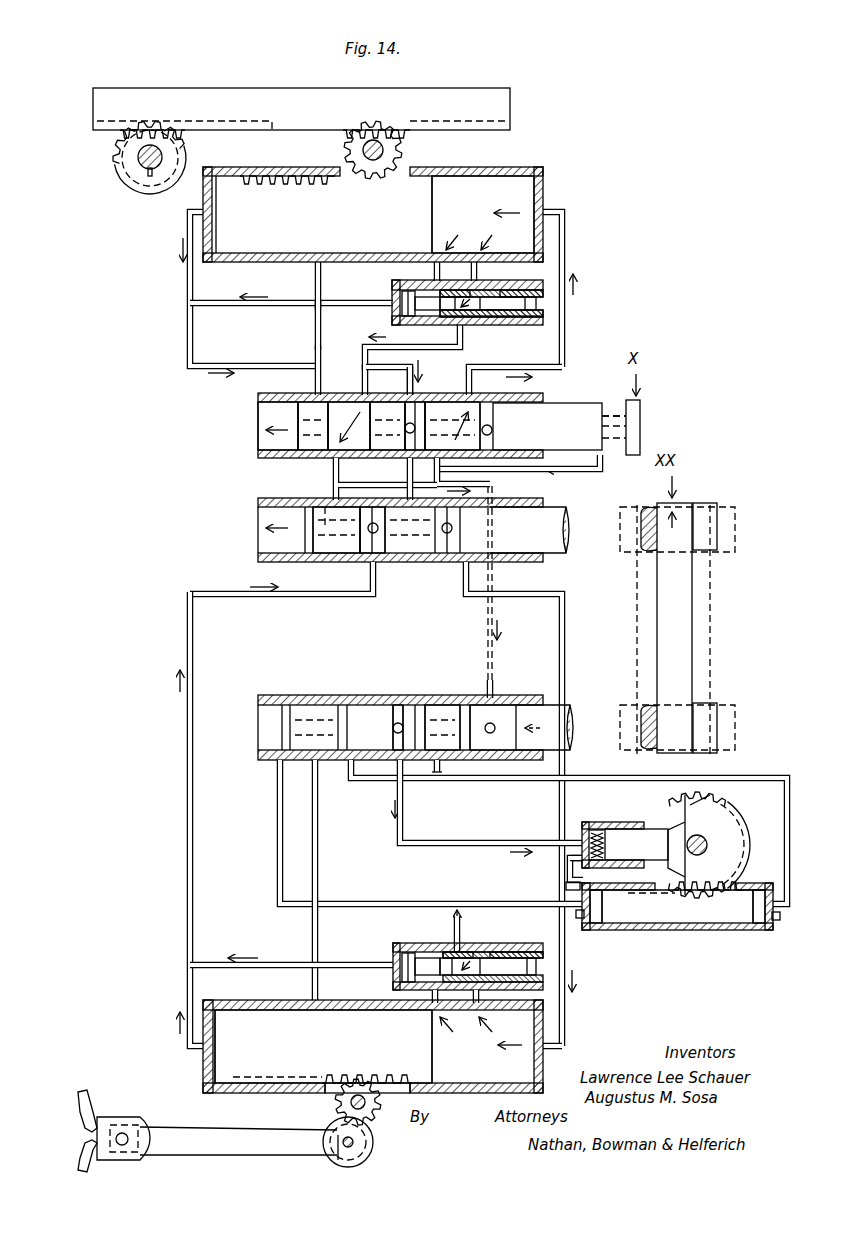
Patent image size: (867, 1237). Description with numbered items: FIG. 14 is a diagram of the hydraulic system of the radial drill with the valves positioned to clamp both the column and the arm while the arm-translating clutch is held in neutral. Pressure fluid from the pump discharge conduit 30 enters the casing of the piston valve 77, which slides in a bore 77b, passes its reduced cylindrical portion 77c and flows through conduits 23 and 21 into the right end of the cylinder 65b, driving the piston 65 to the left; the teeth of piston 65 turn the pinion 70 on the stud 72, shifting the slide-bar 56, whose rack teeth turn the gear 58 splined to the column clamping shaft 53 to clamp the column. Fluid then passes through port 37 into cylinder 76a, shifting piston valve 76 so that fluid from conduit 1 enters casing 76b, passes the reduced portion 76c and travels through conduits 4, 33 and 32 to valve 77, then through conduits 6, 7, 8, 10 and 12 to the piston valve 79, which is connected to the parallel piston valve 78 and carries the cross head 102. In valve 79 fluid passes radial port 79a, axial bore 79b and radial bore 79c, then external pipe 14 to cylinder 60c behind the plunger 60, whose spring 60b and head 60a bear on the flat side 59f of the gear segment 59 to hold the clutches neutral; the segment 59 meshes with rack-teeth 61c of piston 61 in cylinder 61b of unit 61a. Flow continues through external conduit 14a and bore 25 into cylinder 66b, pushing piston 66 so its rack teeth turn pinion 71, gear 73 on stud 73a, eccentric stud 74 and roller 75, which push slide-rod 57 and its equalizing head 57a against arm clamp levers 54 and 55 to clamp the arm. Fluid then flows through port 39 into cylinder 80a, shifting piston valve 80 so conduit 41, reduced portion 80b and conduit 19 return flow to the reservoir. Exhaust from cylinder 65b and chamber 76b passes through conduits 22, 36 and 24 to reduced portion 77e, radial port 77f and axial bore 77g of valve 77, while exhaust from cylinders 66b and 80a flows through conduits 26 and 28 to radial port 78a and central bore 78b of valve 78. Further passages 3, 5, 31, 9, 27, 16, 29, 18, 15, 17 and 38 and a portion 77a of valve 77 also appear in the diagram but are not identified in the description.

The slide-bar 56 is at (301, 113).
The gear 58 is at (113, 153).
The column clamping shaft 53 is at (140, 162).
The stud 72 is at (362, 150).
The pinion 70 is at (400, 150).
The piston 65 is at (373, 214).
The cylinder 65b is at (470, 178).
The conduit 22 is at (198, 210).
The conduit 21 is at (546, 212).
The conduit 3 is at (314, 270).
The conduit 5 is at (314, 334).
The conduit 31 is at (321, 352).
The conduit 36 is at (388, 306).
The port 37 is at (433, 274).
The conduit 1 is at (478, 274).
The piston valve 76 is at (467, 302).
The cylinder 76a is at (447, 289).
The casing 76b is at (514, 285).
The reduced portion 76c is at (478, 326).
The conduit 33 is at (430, 346).
The conduit 4 is at (462, 333).
The conduit 32 is at (406, 376).
The conduit 24 is at (414, 372).
The conduit 23 is at (473, 392).
The piston valve 77 is at (449, 425).
The valve land 77a is at (345, 400).
The bore 77b is at (268, 404).
The reduced cylindrical portion 77c is at (470, 414).
The reduced portion 77e is at (420, 400).
The radial port 77f is at (388, 452).
The axial bore 77g is at (310, 400).
The radial port 79a is at (500, 726).
The pump discharge conduit 30 is at (602, 472).
The conduit 8 is at (492, 484).
The conduit 10 is at (494, 484).
The conduit 6 is at (333, 470).
The conduit 7 is at (360, 480).
The conduit 9 is at (413, 478).
The piston valve 78 is at (640, 528).
The radial port 78a is at (372, 535).
The central bore 78b is at (322, 506).
The conduit 28 is at (377, 578).
The conduit 26 is at (187, 772).
The conduit 27 is at (565, 624).
The bore 25 is at (552, 1050).
The conduit 12 is at (494, 694).
The cross head 102 is at (687, 620).
The piston valve 79 is at (558, 712).
The axial bore 79b is at (450, 703).
The radial bore 79c is at (406, 703).
The conduit 16 is at (277, 792).
The conduit 29 is at (319, 932).
The conduit 18 is at (362, 782).
The conduit 15 is at (510, 782).
The external pipe 14 is at (404, 812).
The port 17 is at (443, 770).
The external conduit 14a is at (567, 882).
The plunger 60 is at (633, 849).
The head 60a is at (680, 822).
The spring 60b is at (597, 822).
The cylinder 60c is at (568, 858).
The gear segment 59 is at (709, 845).
The flat side 59f is at (690, 822).
The piston 61 is at (678, 906).
The unit 61a is at (603, 931).
The cylinder 61b is at (760, 931).
The rack-teeth 61c is at (708, 892).
The conduit 38 is at (388, 962).
The conduit 19 is at (462, 930).
The piston valve 80 is at (468, 966).
The cylinder 80a is at (448, 953).
The reduced portion 80b is at (485, 950).
The port 39 is at (430, 995).
The conduit 41 is at (479, 1003).
The piston 66 is at (373, 1046).
The cylinder 66b is at (272, 1010).
The pinion 71 is at (382, 1090).
The gear 73 is at (375, 1141).
The stud 73a is at (365, 1150).
The eccentric stud 74 is at (342, 1141).
The roller 75 is at (336, 1157).
The clamp actuating slide-rod 57 is at (217, 1138).
The equalizing head 57a is at (108, 1118).
The arm clamp lever 54 is at (80, 1109).
The arm clamp lever 55 is at (80, 1159).